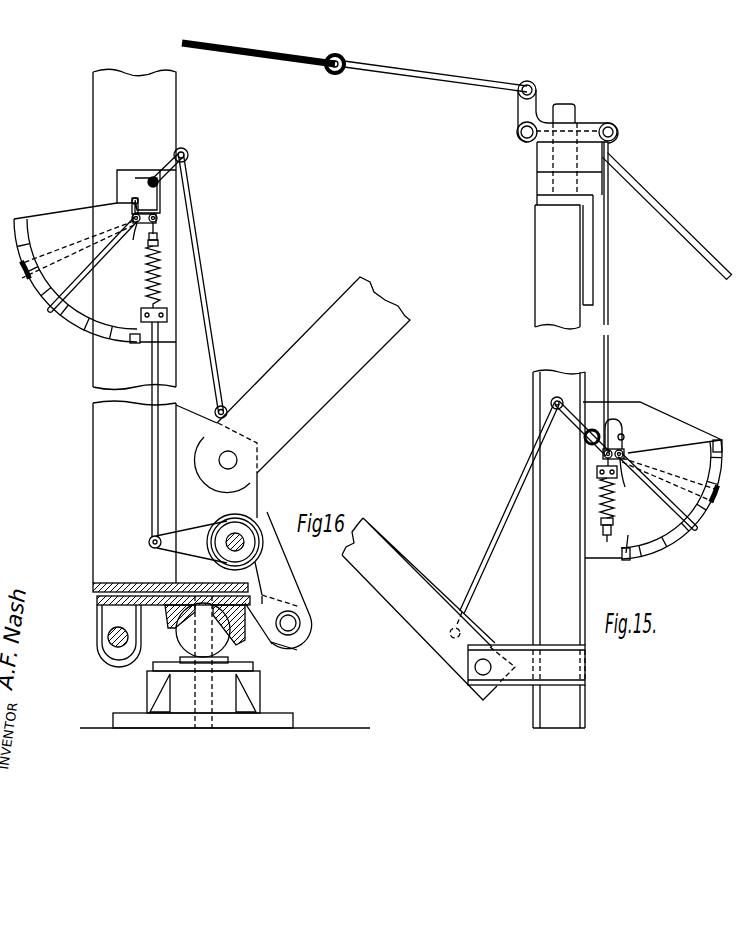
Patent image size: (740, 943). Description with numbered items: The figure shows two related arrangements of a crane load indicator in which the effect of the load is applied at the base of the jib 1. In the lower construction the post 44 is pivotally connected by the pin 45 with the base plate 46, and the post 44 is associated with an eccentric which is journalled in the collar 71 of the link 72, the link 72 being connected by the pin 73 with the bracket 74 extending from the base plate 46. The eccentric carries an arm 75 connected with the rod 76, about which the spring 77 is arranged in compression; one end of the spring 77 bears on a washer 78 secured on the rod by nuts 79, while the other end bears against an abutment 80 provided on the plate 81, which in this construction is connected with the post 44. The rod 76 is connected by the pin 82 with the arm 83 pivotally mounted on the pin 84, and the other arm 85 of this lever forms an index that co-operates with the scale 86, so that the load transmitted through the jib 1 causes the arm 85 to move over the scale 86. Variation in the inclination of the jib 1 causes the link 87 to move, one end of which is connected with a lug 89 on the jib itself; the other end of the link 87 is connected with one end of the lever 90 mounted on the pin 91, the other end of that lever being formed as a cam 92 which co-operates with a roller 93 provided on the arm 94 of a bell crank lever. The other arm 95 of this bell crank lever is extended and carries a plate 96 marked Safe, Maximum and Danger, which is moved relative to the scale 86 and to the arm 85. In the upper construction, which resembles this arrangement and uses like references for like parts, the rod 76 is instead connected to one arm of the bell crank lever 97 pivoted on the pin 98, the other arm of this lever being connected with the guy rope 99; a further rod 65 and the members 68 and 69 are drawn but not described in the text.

In FIG. 16, the jib 1 is at (333, 341).
In FIG. 15, the jib 1 is at (403, 585).
In FIG. 16, the post 44 is at (103, 362).
In FIG. 15, the post 44 is at (540, 378).
In FIG. 16, the pin 45 is at (105, 641).
In FIG. 16, the base plate 46 is at (262, 636).
In FIG. 15, the rod 65 is at (670, 199).
In FIG. 16, the shaft 68 is at (226, 542).
In FIG. 16, the hub 69 is at (250, 525).
In FIG. 16, the collar 71 is at (262, 532).
In FIG. 16, the link 72 is at (281, 572).
In FIG. 16, the pin 73 is at (300, 622).
In FIG. 16, the bracket 74 is at (294, 642).
In FIG. 16, the arm 75 is at (185, 527).
In FIG. 16, the rod 76 is at (152, 422).
In FIG. 15, the rod 76 is at (610, 294).
In FIG. 16, the spring 77 is at (163, 286).
In FIG. 15, the spring 77 is at (598, 497).
In FIG. 16, the washer 78 is at (160, 244).
In FIG. 15, the washer 78 is at (600, 517).
In FIG. 16, the nuts 79 is at (158, 237).
In FIG. 15, the nuts 79 is at (600, 531).
In FIG. 16, the abutment 80 is at (168, 317).
In FIG. 15, the abutment 80 is at (597, 472).
In FIG. 16, the plate 81 is at (92, 313).
In FIG. 15, the plate 81 is at (633, 558).
In FIG. 16, the pin 82 is at (158, 217).
In FIG. 15, the pin 82 is at (604, 453).
In FIG. 16, the arm 83 is at (127, 240).
In FIG. 15, the arm 83 is at (626, 481).
In FIG. 16, the pin 84 is at (131, 218).
In FIG. 15, the pin 84 is at (624, 452).
In FIG. 16, the arm 85 is at (93, 264).
In FIG. 15, the arm 85 is at (664, 503).
In FIG. 16, the scale 86 is at (43, 291).
In FIG. 15, the scale 86 is at (665, 549).
In FIG. 16, the link 87 is at (214, 350).
In FIG. 15, the link 87 is at (506, 512).
In FIG. 16, the lug 89 is at (223, 407).
In FIG. 16, the lever 90 is at (174, 157).
In FIG. 15, the lever 90 is at (569, 414).
In FIG. 16, the pin 91 is at (149, 180).
In FIG. 15, the pin 91 is at (592, 429).
In FIG. 16, the cam 92 is at (160, 196).
In FIG. 15, the cam 92 is at (612, 418).
In FIG. 16, the roller 93 is at (77, 249).
In FIG. 15, the roller 93 is at (672, 469).
In FIG. 16, the arm 94 is at (130, 205).
In FIG. 15, the arm 94 is at (624, 448).
In FIG. 16, the arm 95 is at (132, 200).
In FIG. 15, the arm 95 is at (623, 434).
In FIG. 16, the plate 96 is at (16, 276).
In FIG. 15, the plate 96 is at (712, 506).
In FIG. 15, the bell crank lever 97 is at (579, 133).
In FIG. 15, the pin 98 is at (520, 138).
In FIG. 15, the guy rope 99 is at (289, 56).